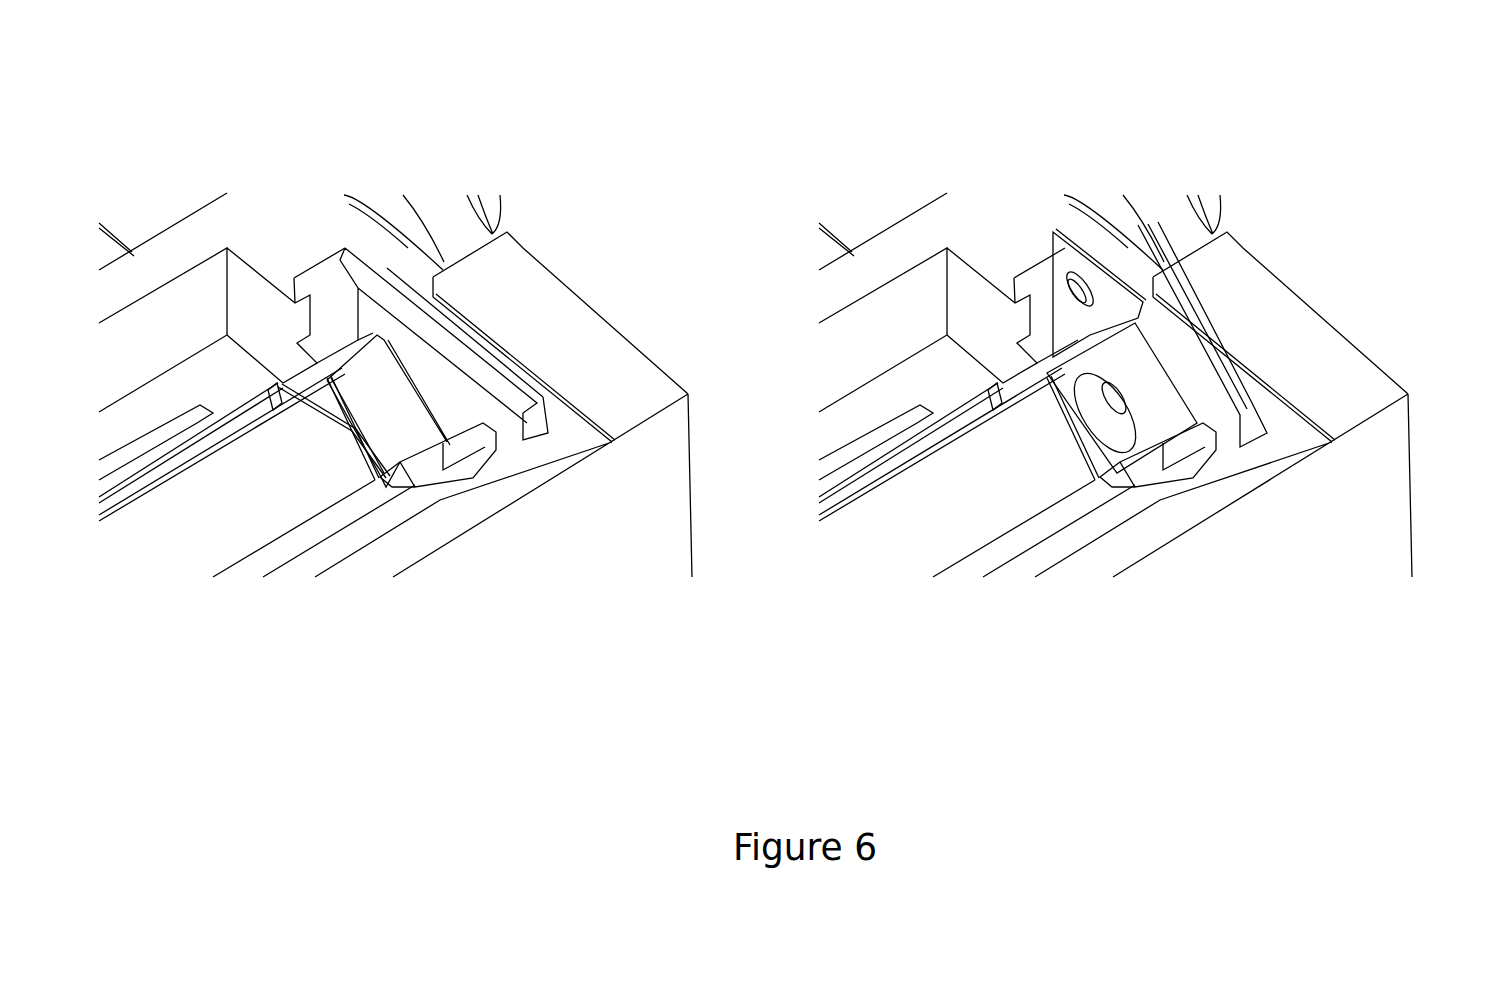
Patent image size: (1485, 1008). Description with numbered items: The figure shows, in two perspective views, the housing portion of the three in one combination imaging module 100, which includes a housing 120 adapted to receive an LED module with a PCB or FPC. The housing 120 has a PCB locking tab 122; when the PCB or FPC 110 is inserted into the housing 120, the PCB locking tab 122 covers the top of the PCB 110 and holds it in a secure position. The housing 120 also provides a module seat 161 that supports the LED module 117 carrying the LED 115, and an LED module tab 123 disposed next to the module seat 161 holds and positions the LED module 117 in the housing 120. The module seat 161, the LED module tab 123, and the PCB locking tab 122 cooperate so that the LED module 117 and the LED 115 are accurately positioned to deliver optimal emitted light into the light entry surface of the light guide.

The three in one combination imaging module 100 is at (402, 93).
The housing 120 is at (525, 250).
The PCB locking tab 122 is at (432, 330).
The module seat 161 is at (385, 412).
The LED module tab 123 is at (470, 442).
The PCB or FPC 110 is at (1108, 283).
The LED module 117 is at (1142, 350).
The LED 115 is at (1118, 408).